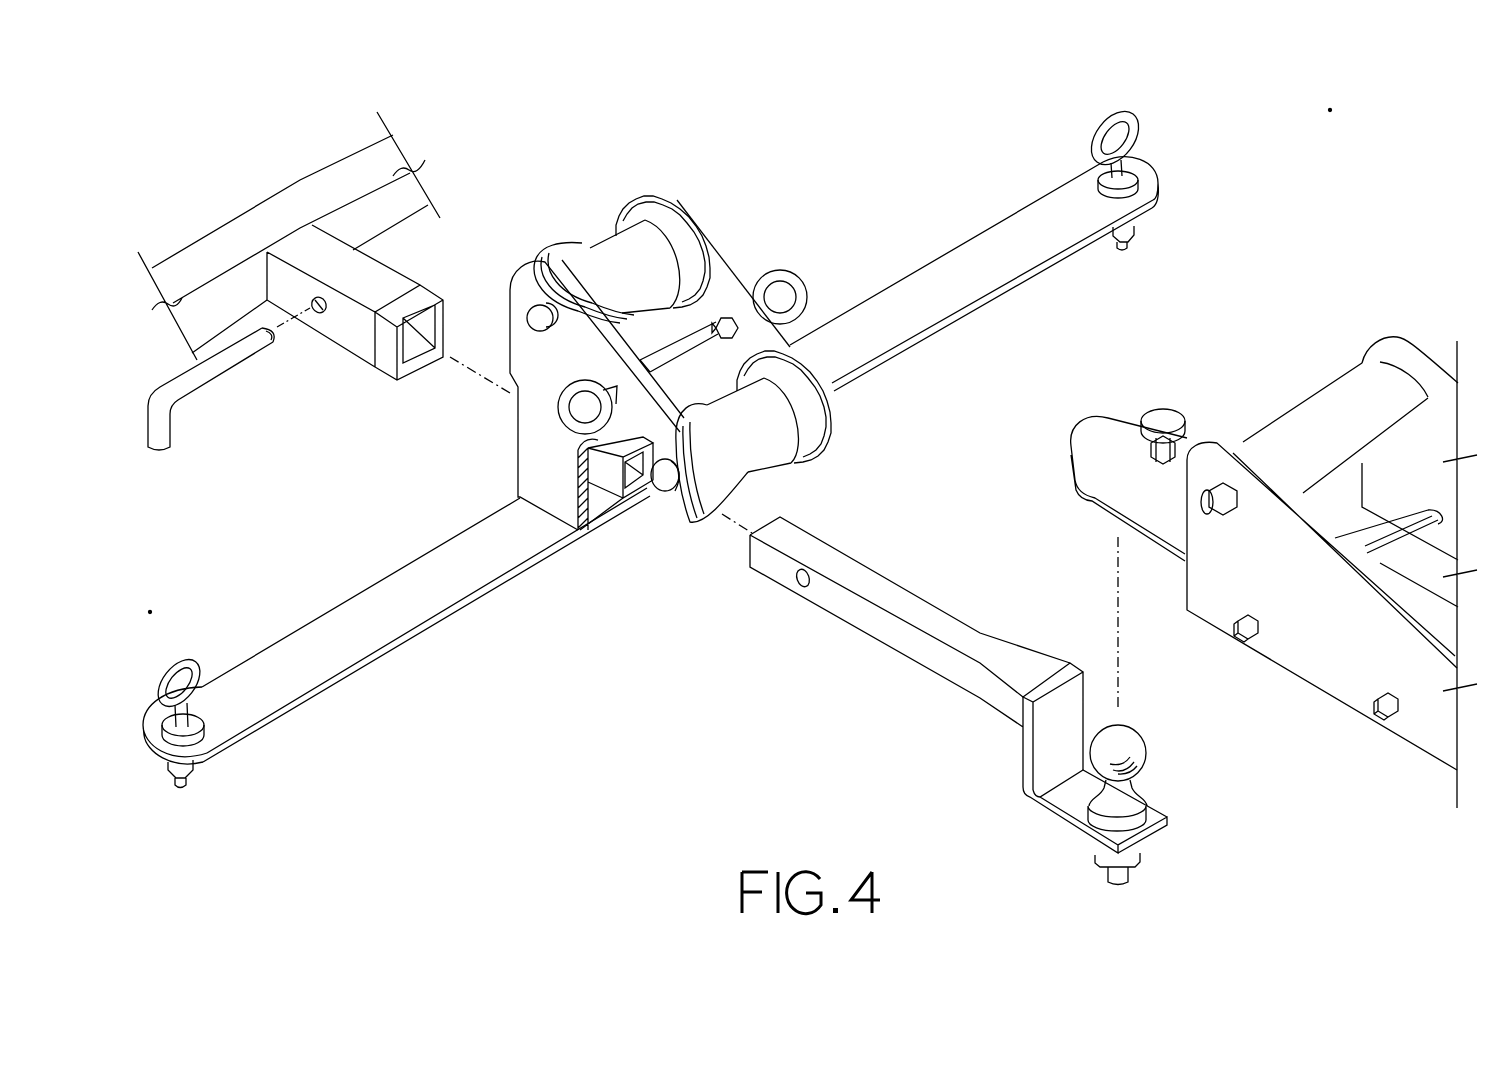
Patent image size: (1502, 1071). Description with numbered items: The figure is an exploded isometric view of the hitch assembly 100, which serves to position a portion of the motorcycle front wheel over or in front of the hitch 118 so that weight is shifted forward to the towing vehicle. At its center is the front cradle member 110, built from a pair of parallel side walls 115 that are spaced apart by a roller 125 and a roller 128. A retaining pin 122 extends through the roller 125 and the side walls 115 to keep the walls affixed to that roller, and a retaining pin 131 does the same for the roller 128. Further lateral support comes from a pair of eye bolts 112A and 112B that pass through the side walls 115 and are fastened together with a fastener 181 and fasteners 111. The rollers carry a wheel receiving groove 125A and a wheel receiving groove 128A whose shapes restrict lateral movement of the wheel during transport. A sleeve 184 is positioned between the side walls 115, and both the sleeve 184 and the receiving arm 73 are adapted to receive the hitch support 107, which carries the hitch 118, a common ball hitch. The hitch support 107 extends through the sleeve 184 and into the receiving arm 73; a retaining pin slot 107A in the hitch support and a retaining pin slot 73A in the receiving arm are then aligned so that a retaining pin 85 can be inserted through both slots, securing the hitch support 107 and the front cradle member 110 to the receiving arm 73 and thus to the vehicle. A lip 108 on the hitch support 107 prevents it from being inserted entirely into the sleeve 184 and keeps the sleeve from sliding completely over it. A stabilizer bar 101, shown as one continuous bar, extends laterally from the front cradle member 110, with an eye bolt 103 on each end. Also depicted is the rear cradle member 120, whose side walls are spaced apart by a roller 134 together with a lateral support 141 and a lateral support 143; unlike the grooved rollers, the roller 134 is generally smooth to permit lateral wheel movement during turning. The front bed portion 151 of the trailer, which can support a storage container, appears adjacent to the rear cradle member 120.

The receiving arm 73 is at (350, 330).
The retaining pin slot 73A is at (313, 312).
The retaining pin 85 is at (170, 433).
The hitch assembly 100 is at (1207, 90).
The stabilizer bar 101 is at (297, 672).
The eye bolt 103 is at (205, 690).
The hitch support 107 is at (1050, 817).
The retaining pin slot 107A is at (798, 585).
The lip 108 is at (1062, 663).
The front cradle member 110 is at (750, 192).
The fasteners 111 is at (728, 316).
The eye bolt 112A is at (781, 270).
The eye bolt 112B is at (563, 421).
The side walls 115 is at (578, 367).
The hitch 118 is at (1128, 748).
The rear cradle member 120 is at (194, 732).
The retaining pin 122 is at (534, 311).
The roller 125 is at (655, 198).
The wheel receiving groove 125A is at (596, 246).
The roller 128 is at (832, 426).
The wheel receiving groove 128A is at (767, 447).
The retaining pin 131 is at (666, 491).
The roller 134 is at (1333, 445).
The lateral support 141 is at (1239, 640).
The lateral support 143 is at (1383, 716).
The front bed portion 151 is at (1128, 484).
The fastener 181 is at (672, 362).
The sleeve 184 is at (637, 478).